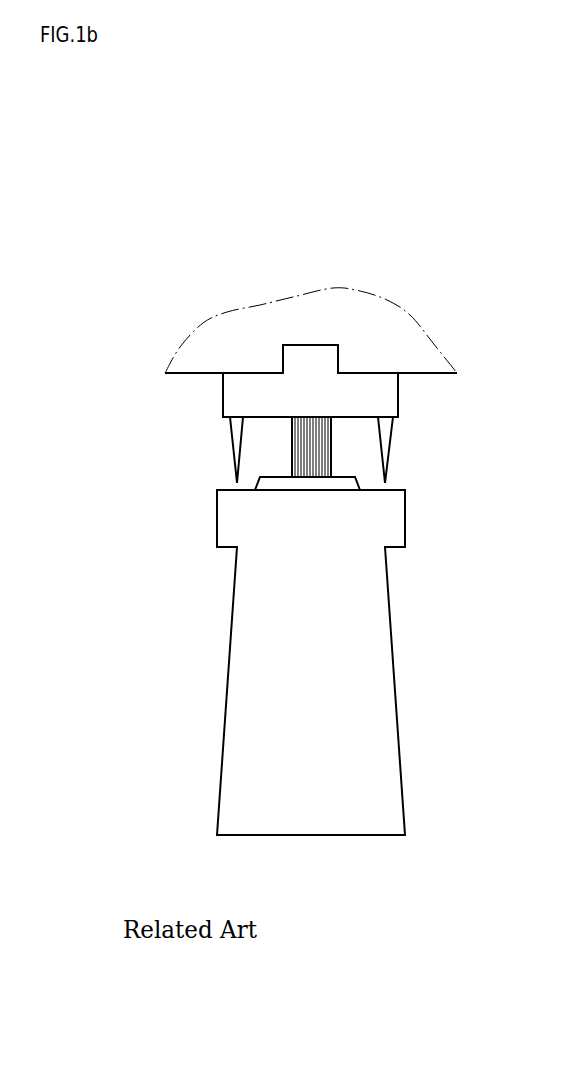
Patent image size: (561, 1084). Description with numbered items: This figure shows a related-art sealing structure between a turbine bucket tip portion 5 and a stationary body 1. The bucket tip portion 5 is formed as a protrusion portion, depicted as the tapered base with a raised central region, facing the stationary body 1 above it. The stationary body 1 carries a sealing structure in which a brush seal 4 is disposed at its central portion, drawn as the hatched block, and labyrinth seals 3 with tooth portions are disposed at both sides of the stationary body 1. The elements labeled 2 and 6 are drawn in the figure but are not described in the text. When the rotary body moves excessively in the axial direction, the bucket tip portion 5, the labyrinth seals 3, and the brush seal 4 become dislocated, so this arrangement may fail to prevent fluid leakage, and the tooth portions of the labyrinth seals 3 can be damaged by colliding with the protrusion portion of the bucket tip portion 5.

The stationary body 1 is at (257, 328).
The key cap body 2 is at (393, 392).
The labyrinth seals 3 is at (389, 452).
The brush seal 4 is at (305, 445).
The bucket tip portion 5 is at (382, 595).
The support plate 6 is at (355, 483).